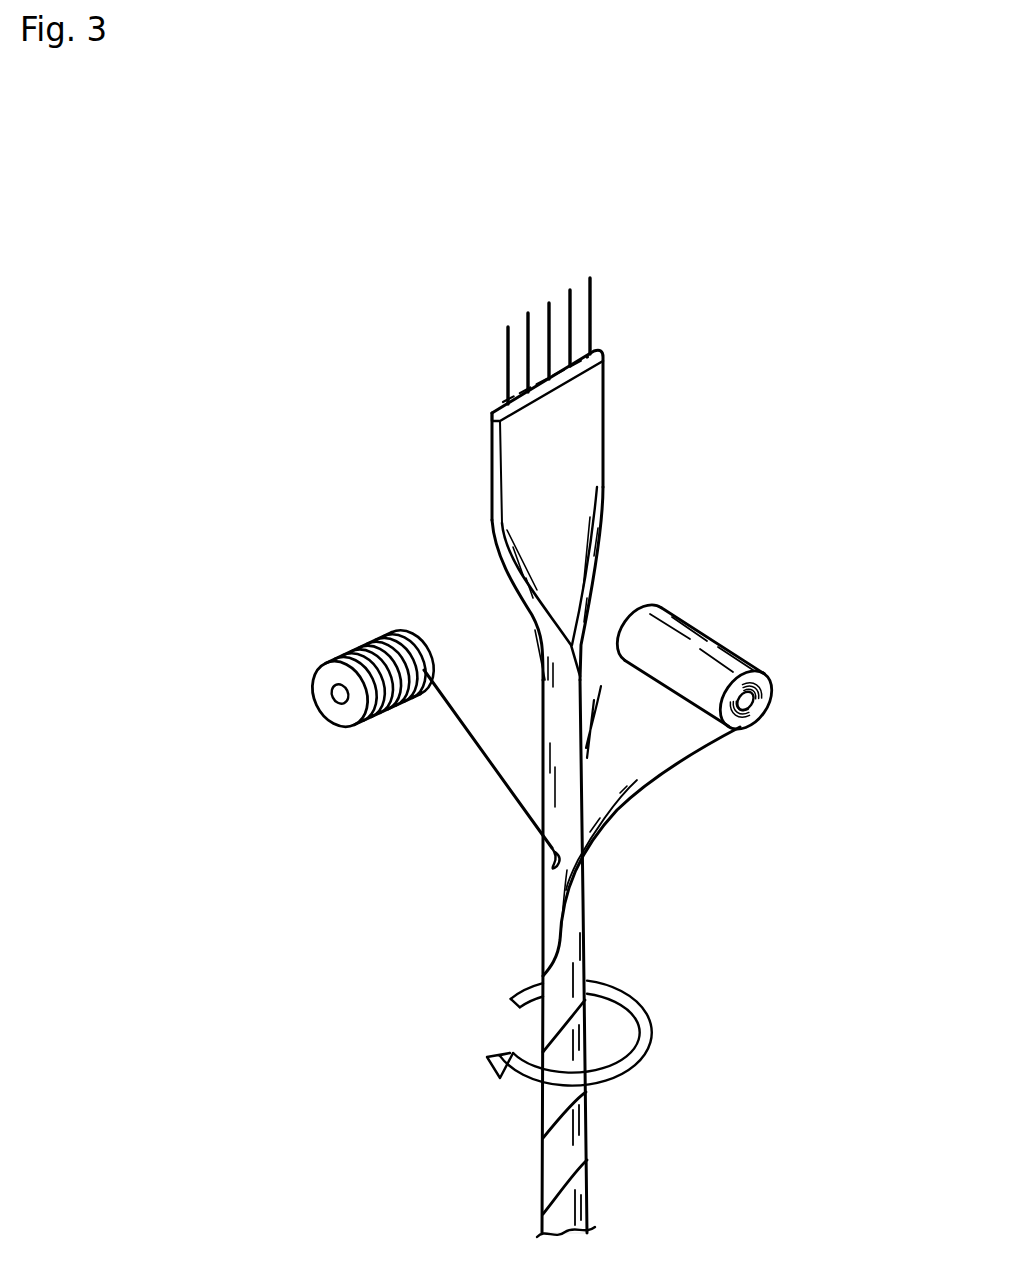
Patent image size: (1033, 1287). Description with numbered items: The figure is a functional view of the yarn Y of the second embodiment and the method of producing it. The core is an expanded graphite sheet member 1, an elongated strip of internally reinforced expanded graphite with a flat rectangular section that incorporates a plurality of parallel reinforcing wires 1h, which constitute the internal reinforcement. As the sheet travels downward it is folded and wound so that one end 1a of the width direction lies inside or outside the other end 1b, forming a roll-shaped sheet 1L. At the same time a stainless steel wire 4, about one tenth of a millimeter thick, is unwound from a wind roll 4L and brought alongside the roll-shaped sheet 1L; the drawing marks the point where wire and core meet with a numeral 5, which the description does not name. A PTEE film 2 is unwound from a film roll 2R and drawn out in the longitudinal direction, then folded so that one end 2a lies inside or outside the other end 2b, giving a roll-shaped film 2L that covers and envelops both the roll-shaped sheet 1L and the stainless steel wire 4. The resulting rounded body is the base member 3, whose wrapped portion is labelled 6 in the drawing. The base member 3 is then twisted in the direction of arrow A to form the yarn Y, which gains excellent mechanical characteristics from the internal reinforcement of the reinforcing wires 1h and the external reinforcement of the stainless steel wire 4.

The expanded graphite sheet member 1 is at (575, 433).
The reinforcing wires 1h is at (590, 340).
The one end of the width direction 1a is at (607, 557).
The other end of the width direction 1b is at (492, 492).
The roll-shaped sheet 1L is at (539, 718).
The PTEE film 2 is at (670, 736).
The film roll 2R is at (730, 646).
The one end of the PTEE film 2a is at (601, 673).
The other end of the PTEE film 2b is at (663, 770).
The roll-shaped film 2L is at (580, 893).
The base member 3 is at (538, 889).
The stainless steel wire 4 is at (478, 737).
The wind roll of stainless steel wire 4L is at (357, 638).
The binding point / knot 5 is at (543, 851).
The wrapped portion 6 is at (557, 937).
The arrow A is at (522, 1077).
The yarn Y is at (597, 1177).